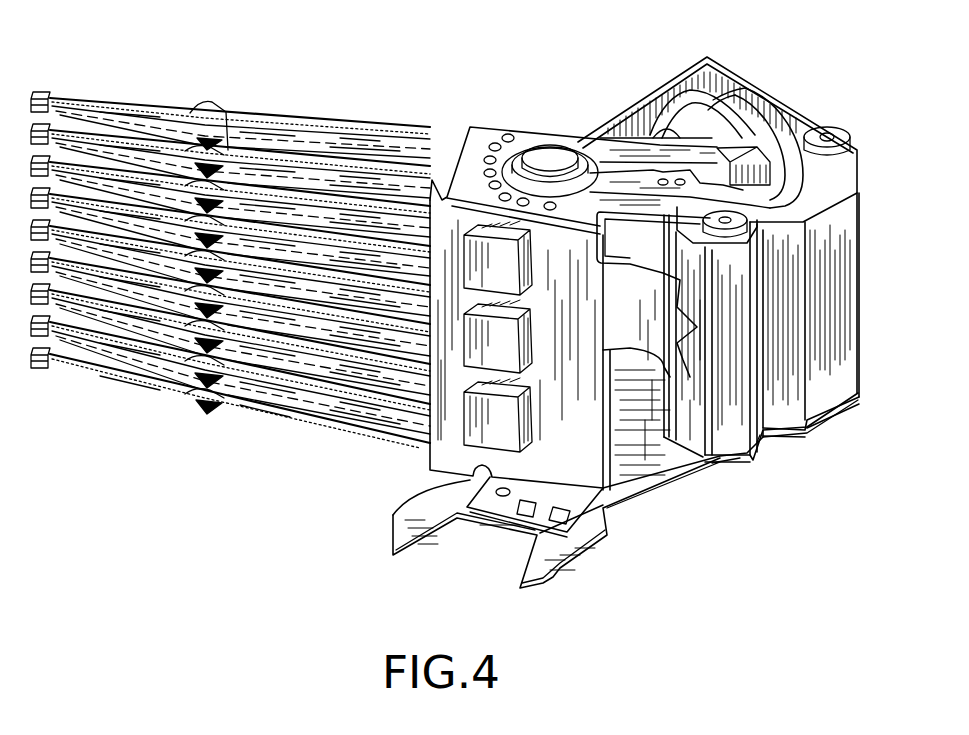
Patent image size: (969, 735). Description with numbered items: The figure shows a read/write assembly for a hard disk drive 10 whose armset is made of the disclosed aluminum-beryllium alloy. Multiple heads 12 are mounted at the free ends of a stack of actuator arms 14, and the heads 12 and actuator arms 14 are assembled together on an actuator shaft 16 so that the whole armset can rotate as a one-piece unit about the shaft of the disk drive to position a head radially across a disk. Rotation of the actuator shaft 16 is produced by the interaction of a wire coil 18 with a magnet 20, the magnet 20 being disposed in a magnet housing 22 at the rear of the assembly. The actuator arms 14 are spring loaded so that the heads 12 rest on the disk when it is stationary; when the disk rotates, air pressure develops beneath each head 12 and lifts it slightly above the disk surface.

The read/write assembly for hard disk drive 10 is at (512, 84).
The heads 12 is at (44, 90).
The actuator arms 14 is at (233, 127).
The actuator shaft 16 is at (549, 150).
The wire coil 18 is at (762, 140).
The magnet 20 is at (773, 140).
The magnet housing 22 is at (833, 390).